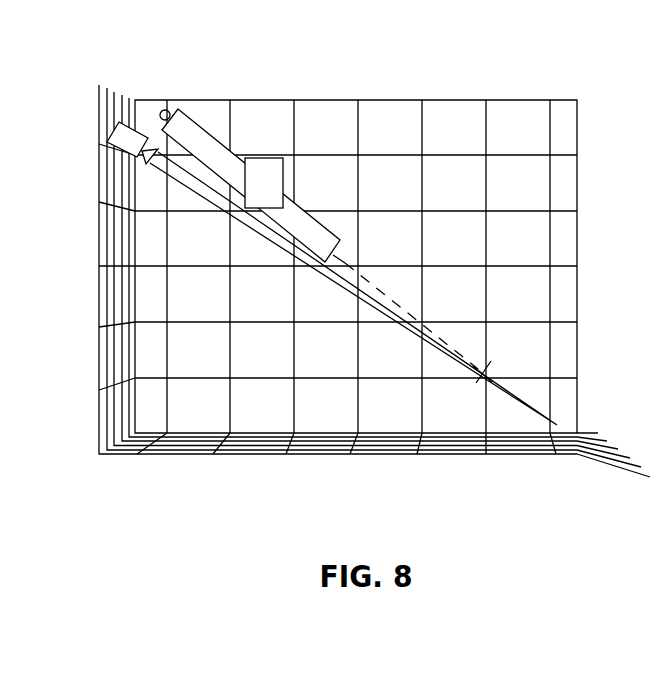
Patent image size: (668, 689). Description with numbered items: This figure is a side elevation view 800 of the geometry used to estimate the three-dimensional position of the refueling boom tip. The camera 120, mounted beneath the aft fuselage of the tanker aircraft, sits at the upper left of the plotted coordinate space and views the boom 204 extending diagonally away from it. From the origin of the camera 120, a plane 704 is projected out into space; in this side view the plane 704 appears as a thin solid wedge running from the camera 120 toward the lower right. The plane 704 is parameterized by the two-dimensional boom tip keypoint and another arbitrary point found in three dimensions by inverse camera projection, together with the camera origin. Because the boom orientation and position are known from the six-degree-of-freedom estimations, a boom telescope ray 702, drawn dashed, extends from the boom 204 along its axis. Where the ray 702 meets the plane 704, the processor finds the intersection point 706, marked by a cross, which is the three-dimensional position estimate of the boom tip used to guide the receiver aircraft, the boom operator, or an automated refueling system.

The camera 120 is at (133, 137).
The boom 204 is at (207, 130).
The side elevation view 800 is at (467, 97).
The boom telescope ray 702 is at (372, 284).
The plane 704 is at (522, 399).
The intersection point 706 is at (477, 380).